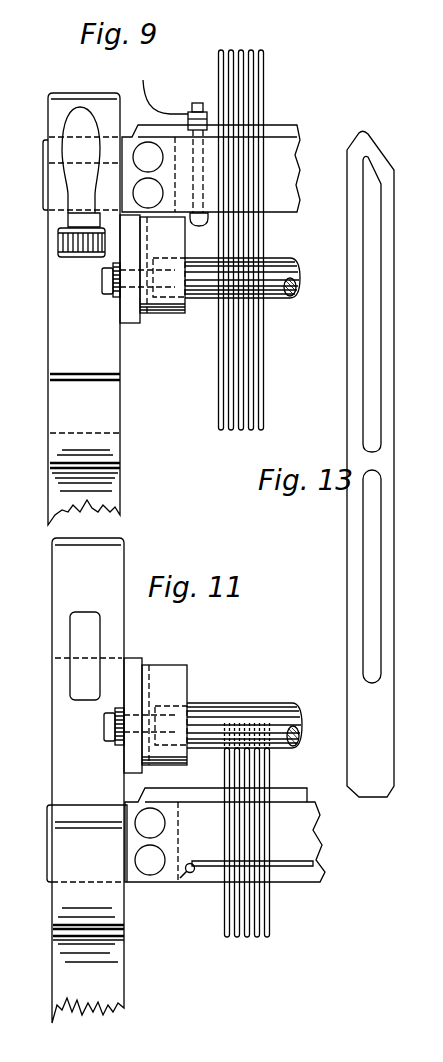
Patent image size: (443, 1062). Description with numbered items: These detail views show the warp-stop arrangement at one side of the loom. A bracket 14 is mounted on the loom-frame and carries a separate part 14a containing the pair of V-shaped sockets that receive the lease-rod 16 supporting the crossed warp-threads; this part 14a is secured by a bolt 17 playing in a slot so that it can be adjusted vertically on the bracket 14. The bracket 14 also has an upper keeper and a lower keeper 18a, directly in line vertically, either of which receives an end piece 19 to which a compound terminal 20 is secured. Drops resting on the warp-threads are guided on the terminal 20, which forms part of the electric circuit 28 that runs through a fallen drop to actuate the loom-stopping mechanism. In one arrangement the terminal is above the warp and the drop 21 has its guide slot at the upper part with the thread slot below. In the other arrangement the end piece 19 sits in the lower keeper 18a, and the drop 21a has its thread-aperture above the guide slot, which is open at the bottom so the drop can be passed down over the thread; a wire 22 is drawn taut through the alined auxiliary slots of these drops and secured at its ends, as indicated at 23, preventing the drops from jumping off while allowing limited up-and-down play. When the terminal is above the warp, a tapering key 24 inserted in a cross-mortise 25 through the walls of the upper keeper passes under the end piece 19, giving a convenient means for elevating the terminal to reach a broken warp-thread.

In FIG. 9, the bracket 14 is at (84, 370).
In FIG. 11, the bracket 14 is at (88, 780).
In FIG. 9, the socket-carrying part 14a is at (172, 245).
In FIG. 11, the socket-carrying part 14a is at (162, 702).
In FIG. 9, the lease-rod 16 is at (265, 263).
In FIG. 11, the lease-rod 16 is at (280, 696).
In FIG. 9, the bolt 17 is at (102, 287).
In FIG. 11, the bolt 17 is at (104, 731).
In FIG. 9, the lower keeper 18a is at (113, 408).
In FIG. 9, the end piece 19 is at (48, 178).
In FIG. 11, the end piece 19 is at (47, 851).
In FIG. 9, the compound terminal 20 is at (211, 168).
In FIG. 11, the compound terminal 20 is at (225, 835).
In FIG. 9, the drop 21 is at (261, 49).
In FIG. 13, the drop 21 is at (355, 352).
In FIG. 11, the drop 21a is at (227, 940).
In FIG. 11, the wire 22 is at (302, 868).
In FIG. 11, the wire securing point 23 is at (185, 875).
In FIG. 9, the tapering key 24 is at (66, 205).
In FIG. 11, the cross-mortise 25 is at (85, 656).
In FIG. 9, the circuit 28 is at (168, 110).